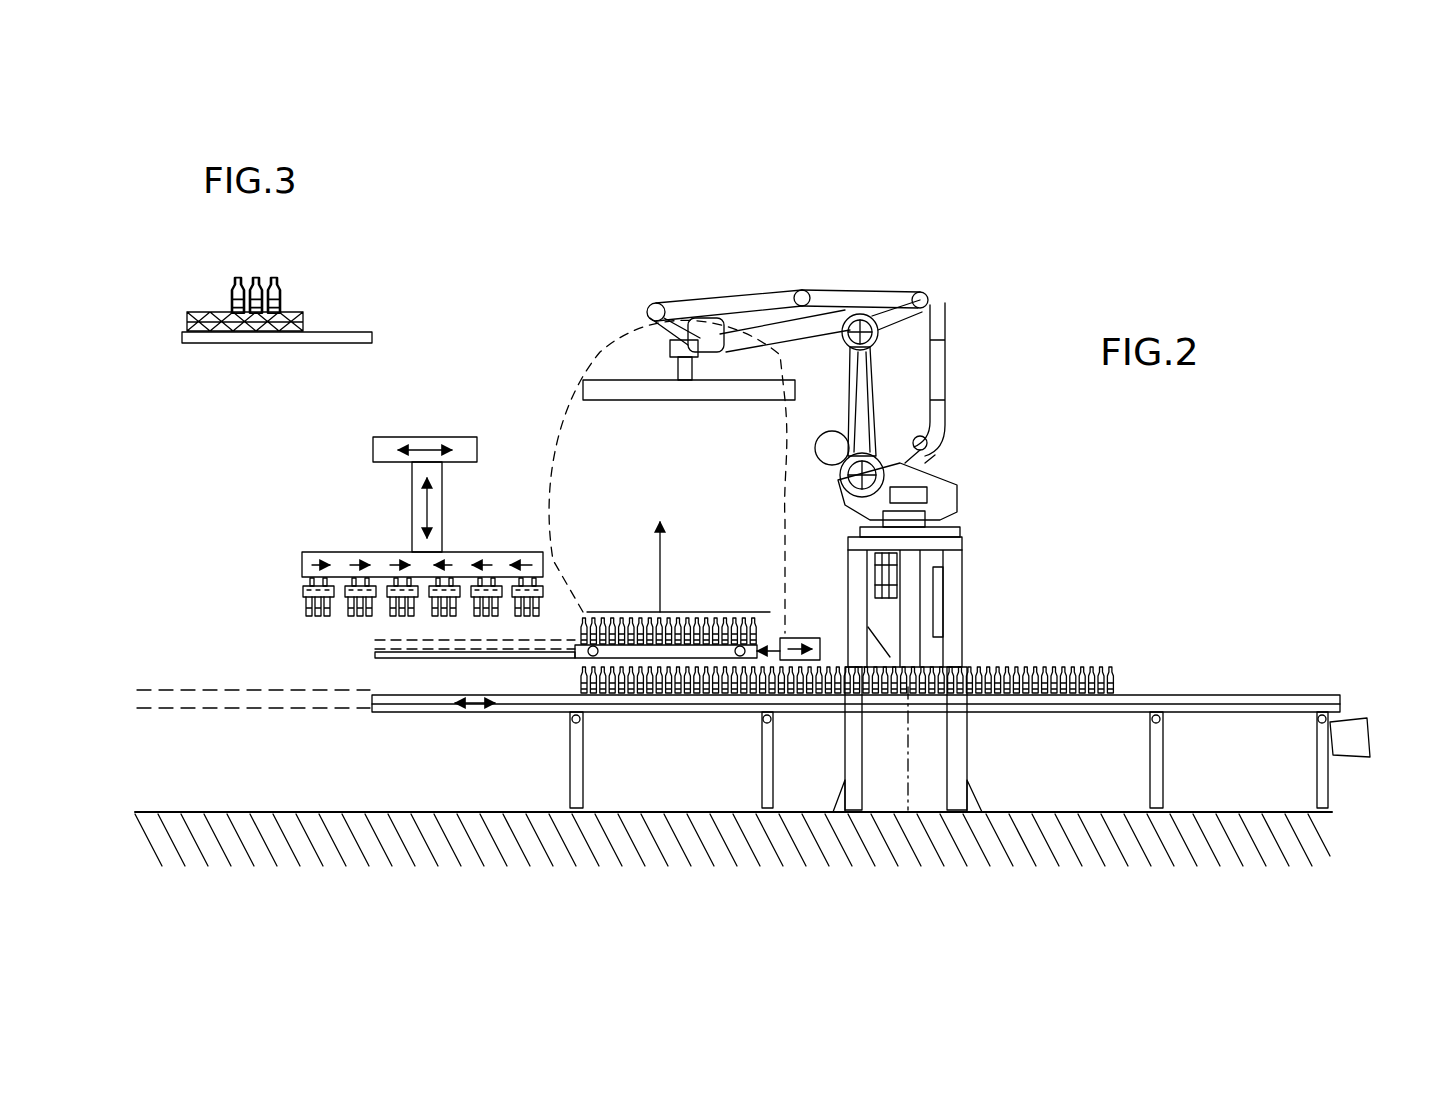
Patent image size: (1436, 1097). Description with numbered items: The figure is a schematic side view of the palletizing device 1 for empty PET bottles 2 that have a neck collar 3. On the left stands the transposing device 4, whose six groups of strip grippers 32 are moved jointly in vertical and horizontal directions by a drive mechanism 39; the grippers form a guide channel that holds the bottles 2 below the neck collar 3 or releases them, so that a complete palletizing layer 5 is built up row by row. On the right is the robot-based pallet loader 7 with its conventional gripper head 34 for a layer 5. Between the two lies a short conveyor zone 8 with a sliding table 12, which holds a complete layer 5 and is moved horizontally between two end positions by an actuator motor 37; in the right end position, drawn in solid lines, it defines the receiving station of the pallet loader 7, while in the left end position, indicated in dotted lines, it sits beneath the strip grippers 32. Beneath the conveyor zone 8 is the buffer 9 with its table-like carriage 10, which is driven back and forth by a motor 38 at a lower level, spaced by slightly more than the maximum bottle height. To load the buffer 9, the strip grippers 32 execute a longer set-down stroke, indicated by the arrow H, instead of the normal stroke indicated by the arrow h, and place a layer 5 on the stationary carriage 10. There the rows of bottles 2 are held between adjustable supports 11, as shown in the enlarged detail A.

In FIG. 2, the device 1 is at (775, 190).
In FIG. 3, the bottles 2 is at (230, 298).
In FIG. 2, the bottles 2 is at (325, 612).
In FIG. 3, the neck collar 3 is at (234, 295).
In FIG. 2, the transposing device 4 is at (365, 533).
In FIG. 2, the palletizing layer 5 is at (708, 620).
In FIG. 2, the pallet loader 7 is at (870, 510).
In FIG. 2, the conveyor zone 8 is at (605, 590).
In FIG. 2, the buffer 9 is at (1222, 685).
In FIG. 3, the carriage 10 is at (266, 340).
In FIG. 2, the carriage 10 is at (1078, 702).
In FIG. 3, the supports 11 is at (285, 312).
In FIG. 2, the sliding table 12 is at (575, 655).
In FIG. 2, the strip grippers 32 is at (305, 590).
In FIG. 2, the gripper head 34 is at (590, 380).
In FIG. 2, the actuator motor 37 is at (800, 636).
In FIG. 2, the motor 38 is at (1350, 735).
In FIG. 2, the drive mechanism 39 is at (452, 500).
In FIG. 2, the detail A is at (1097, 662).
In FIG. 2, the arrow H is at (445, 625).
In FIG. 2, the arrow h is at (455, 642).